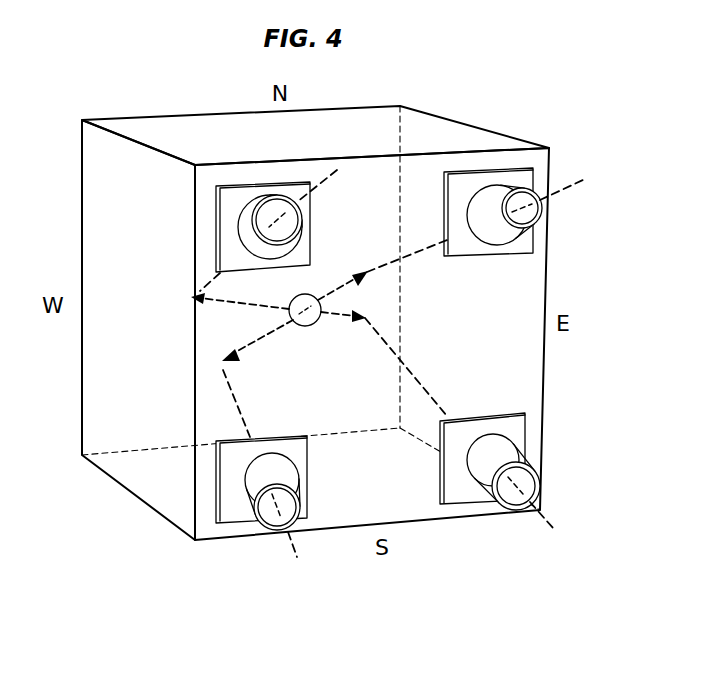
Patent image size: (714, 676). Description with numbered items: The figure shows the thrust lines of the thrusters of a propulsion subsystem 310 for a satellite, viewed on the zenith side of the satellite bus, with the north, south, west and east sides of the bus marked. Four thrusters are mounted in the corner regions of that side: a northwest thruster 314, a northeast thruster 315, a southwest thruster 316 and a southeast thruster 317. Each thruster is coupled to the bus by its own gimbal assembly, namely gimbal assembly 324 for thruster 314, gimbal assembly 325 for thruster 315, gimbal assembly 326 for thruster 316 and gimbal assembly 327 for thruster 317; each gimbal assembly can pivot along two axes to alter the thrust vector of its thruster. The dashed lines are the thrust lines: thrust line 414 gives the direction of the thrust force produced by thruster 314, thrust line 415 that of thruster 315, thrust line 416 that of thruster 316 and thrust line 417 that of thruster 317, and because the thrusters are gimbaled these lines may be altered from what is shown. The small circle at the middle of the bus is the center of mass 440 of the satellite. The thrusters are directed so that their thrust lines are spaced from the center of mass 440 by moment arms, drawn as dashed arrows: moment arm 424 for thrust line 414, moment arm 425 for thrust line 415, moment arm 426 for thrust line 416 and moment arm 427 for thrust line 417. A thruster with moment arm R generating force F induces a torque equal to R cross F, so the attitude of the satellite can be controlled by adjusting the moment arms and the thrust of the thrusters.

The propulsion subsystem 310 is at (514, 556).
The northwest thruster 314 is at (262, 198).
The northeast thruster 315 is at (533, 217).
The southwest thruster 316 is at (290, 480).
The southeast thruster 317 is at (513, 456).
The gimbal assembly 324 is at (233, 205).
The gimbal assembly 325 is at (520, 246).
The gimbal assembly 326 is at (233, 510).
The gimbal assembly 327 is at (460, 492).
The thrust line 414 is at (215, 278).
The thrust line 415 is at (417, 252).
The thrust line 416 is at (238, 413).
The thrust line 417 is at (412, 369).
The moment arm 424 is at (252, 305).
The moment arm 425 is at (337, 290).
The moment arm 426 is at (252, 342).
The moment arm 427 is at (347, 308).
The center of mass 440 is at (313, 322).